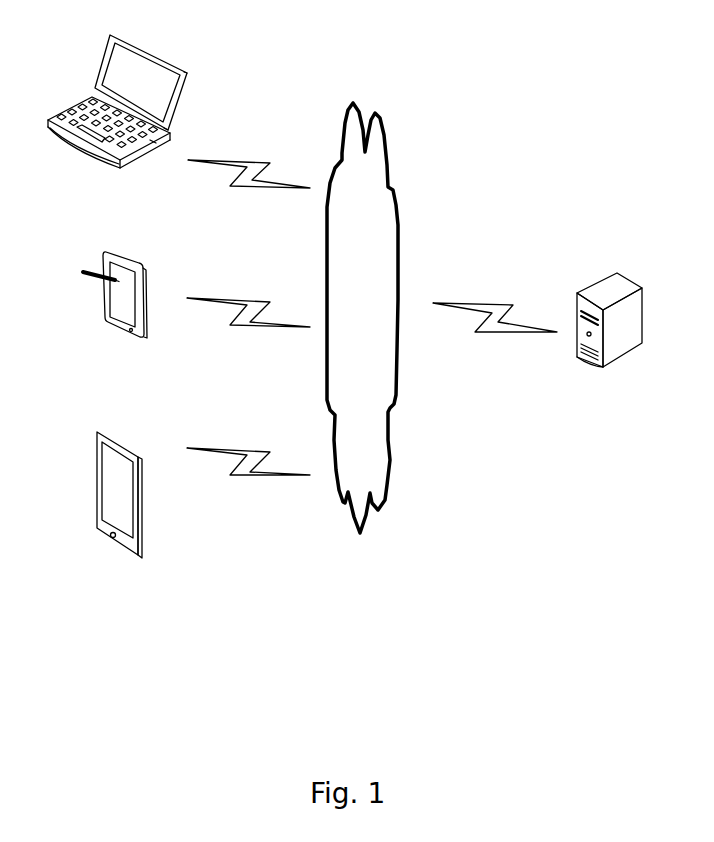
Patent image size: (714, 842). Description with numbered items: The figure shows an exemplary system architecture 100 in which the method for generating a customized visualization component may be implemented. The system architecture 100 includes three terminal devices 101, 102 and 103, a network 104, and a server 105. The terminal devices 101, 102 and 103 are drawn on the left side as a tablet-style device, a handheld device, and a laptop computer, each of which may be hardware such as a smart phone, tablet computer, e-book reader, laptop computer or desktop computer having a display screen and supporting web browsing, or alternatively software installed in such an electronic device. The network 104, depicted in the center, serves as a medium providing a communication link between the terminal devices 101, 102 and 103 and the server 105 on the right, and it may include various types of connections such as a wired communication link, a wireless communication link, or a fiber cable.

The system architecture 100 is at (636, 85).
The terminal device 101 is at (119, 513).
The terminal device 102 is at (115, 314).
The terminal device 103 is at (117, 120).
The network 104 is at (362, 318).
The server 105 is at (609, 342).